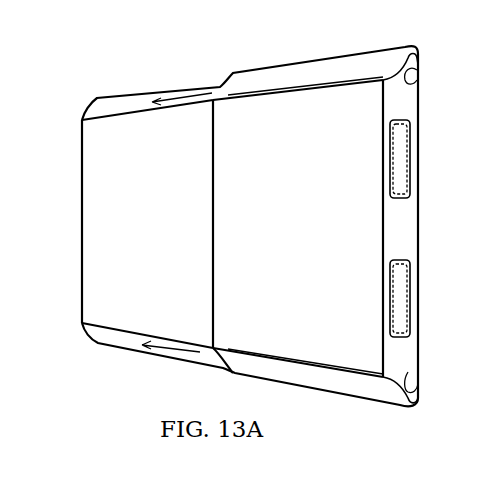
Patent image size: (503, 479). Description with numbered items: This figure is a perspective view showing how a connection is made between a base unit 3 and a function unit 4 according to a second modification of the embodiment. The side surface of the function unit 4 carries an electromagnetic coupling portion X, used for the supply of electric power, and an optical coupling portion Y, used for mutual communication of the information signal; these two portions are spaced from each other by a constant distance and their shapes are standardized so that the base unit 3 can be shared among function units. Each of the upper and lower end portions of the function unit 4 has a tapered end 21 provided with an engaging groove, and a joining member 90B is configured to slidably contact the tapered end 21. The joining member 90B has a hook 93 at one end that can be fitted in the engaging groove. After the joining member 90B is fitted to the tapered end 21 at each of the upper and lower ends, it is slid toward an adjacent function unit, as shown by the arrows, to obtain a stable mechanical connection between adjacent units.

The base unit 3 is at (102, 183).
The function unit 4 is at (363, 250).
The joining member 90B is at (315, 73).
The hook 93 is at (413, 75).
The tapered end 21 is at (412, 385).
The electromagnetic coupling portion X is at (399, 158).
The optical coupling portion Y is at (398, 290).